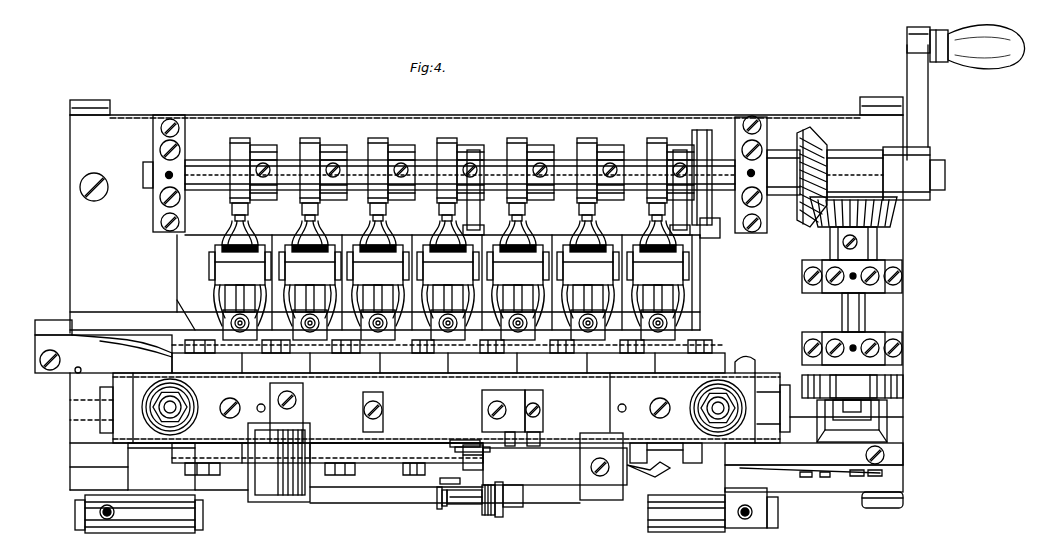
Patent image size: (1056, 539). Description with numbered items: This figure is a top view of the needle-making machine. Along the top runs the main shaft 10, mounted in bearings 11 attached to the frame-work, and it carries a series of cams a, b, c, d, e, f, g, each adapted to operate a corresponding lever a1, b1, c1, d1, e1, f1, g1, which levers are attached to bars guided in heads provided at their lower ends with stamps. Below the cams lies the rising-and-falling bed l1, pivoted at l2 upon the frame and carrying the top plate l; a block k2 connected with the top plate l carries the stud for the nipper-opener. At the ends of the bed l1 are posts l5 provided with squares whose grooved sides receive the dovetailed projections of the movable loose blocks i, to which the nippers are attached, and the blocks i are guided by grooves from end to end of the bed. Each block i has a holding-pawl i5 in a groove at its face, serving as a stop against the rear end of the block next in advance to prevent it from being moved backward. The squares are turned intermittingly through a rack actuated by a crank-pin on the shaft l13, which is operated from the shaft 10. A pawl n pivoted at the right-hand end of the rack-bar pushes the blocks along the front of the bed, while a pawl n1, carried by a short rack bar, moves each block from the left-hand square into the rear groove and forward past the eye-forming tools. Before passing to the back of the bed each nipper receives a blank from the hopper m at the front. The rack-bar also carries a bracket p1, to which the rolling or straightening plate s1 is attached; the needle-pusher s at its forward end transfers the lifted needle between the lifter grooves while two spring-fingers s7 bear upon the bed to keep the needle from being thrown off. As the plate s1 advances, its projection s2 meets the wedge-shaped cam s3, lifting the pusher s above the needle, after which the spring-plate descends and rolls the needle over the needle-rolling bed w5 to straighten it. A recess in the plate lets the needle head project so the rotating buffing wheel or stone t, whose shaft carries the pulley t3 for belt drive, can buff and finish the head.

The main shaft 10 is at (471, 170).
The bearings 11 is at (462, 174).
The cam a is at (253, 171).
The cam b is at (323, 171).
The cam c is at (391, 171).
The cam d is at (460, 178).
The cam e is at (530, 171).
The cam f is at (600, 171).
The cam g is at (683, 179).
The lever a1 is at (240, 280).
The lever b1 is at (310, 280).
The lever c1 is at (378, 280).
The lever d1 is at (448, 280).
The lever e1 is at (518, 280).
The lever f1 is at (588, 280).
The lever g1 is at (658, 280).
The movable loose blocks i is at (438, 407).
The holding-pawl i5 is at (645, 478).
The pawl n1 is at (103, 346).
The pawl n is at (814, 462).
The top plate l is at (451, 408).
The rising-and-falling bed l1 is at (161, 466).
The pivot of the rising-and-falling bed l2 is at (203, 522).
The posts l5 is at (190, 395).
The shaft l13 is at (838, 300).
The hopper m is at (387, 463).
The block k2 is at (512, 411).
The needle-pusher s is at (478, 458).
The rolling or straightening plate s1 is at (555, 466).
The projection s2 is at (511, 430).
The wedge-shaped cam s3 is at (540, 438).
The spring-fingers s7 is at (455, 443).
The needle-rolling bed w5 is at (472, 447).
The buffing wheel or stone t is at (475, 507).
The pulley t3 is at (439, 508).
The bracket p1 is at (612, 500).